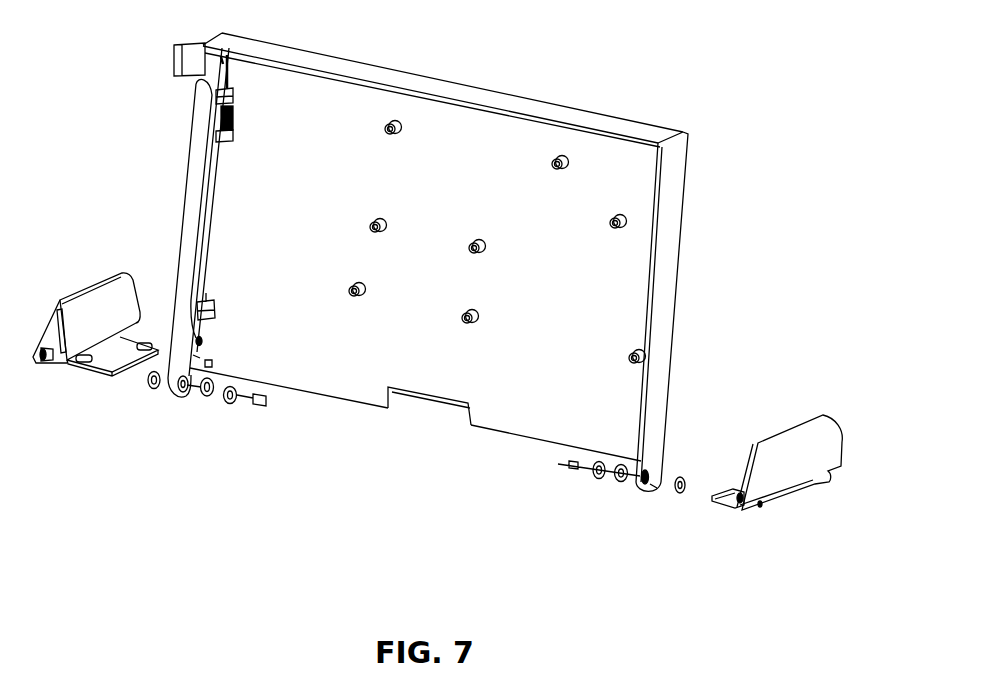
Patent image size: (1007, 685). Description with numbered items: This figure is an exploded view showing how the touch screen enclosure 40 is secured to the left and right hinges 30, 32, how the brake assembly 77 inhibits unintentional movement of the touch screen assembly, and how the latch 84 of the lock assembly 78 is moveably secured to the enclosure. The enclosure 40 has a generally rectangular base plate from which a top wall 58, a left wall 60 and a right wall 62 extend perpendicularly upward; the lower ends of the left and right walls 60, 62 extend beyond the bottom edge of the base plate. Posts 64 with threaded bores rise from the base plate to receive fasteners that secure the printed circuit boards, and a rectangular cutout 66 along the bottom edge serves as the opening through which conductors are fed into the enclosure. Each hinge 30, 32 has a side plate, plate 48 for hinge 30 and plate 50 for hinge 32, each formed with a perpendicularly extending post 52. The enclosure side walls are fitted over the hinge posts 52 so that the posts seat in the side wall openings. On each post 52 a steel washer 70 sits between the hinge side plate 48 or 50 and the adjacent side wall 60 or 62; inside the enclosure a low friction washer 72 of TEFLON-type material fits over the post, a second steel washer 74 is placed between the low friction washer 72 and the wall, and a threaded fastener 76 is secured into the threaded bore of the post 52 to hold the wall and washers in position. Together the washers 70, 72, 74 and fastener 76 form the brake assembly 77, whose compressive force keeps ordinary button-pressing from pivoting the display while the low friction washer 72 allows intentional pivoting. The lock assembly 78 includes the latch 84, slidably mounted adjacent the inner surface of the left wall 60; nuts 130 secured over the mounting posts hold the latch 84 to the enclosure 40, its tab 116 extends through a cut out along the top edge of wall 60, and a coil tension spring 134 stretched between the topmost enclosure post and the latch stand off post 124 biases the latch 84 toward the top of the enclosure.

The hinge 30 is at (61, 284).
The hinge 32 is at (833, 428).
The touch screen enclosure 40 is at (468, 190).
The side plate 48 is at (109, 320).
The side plate 50 is at (810, 471).
The post 52 is at (50, 368).
The top wall 58 is at (488, 92).
The left wall 60 is at (190, 200).
The right wall 62 is at (663, 282).
The posts 64 is at (478, 308).
The rectangular cutout 66 is at (414, 407).
The steel washer 70 is at (150, 394).
The low friction washer 72 is at (200, 398).
The second steel washer 74 is at (230, 404).
The threaded fastener 76 is at (267, 402).
The brake assembly 77 is at (288, 455).
The lock assembly 78 is at (127, 142).
The latch 84 is at (211, 221).
The tab 116 is at (173, 55).
The latch stand off post 124 is at (229, 141).
The nuts 130 is at (233, 93).
The coil tension spring 134 is at (236, 118).